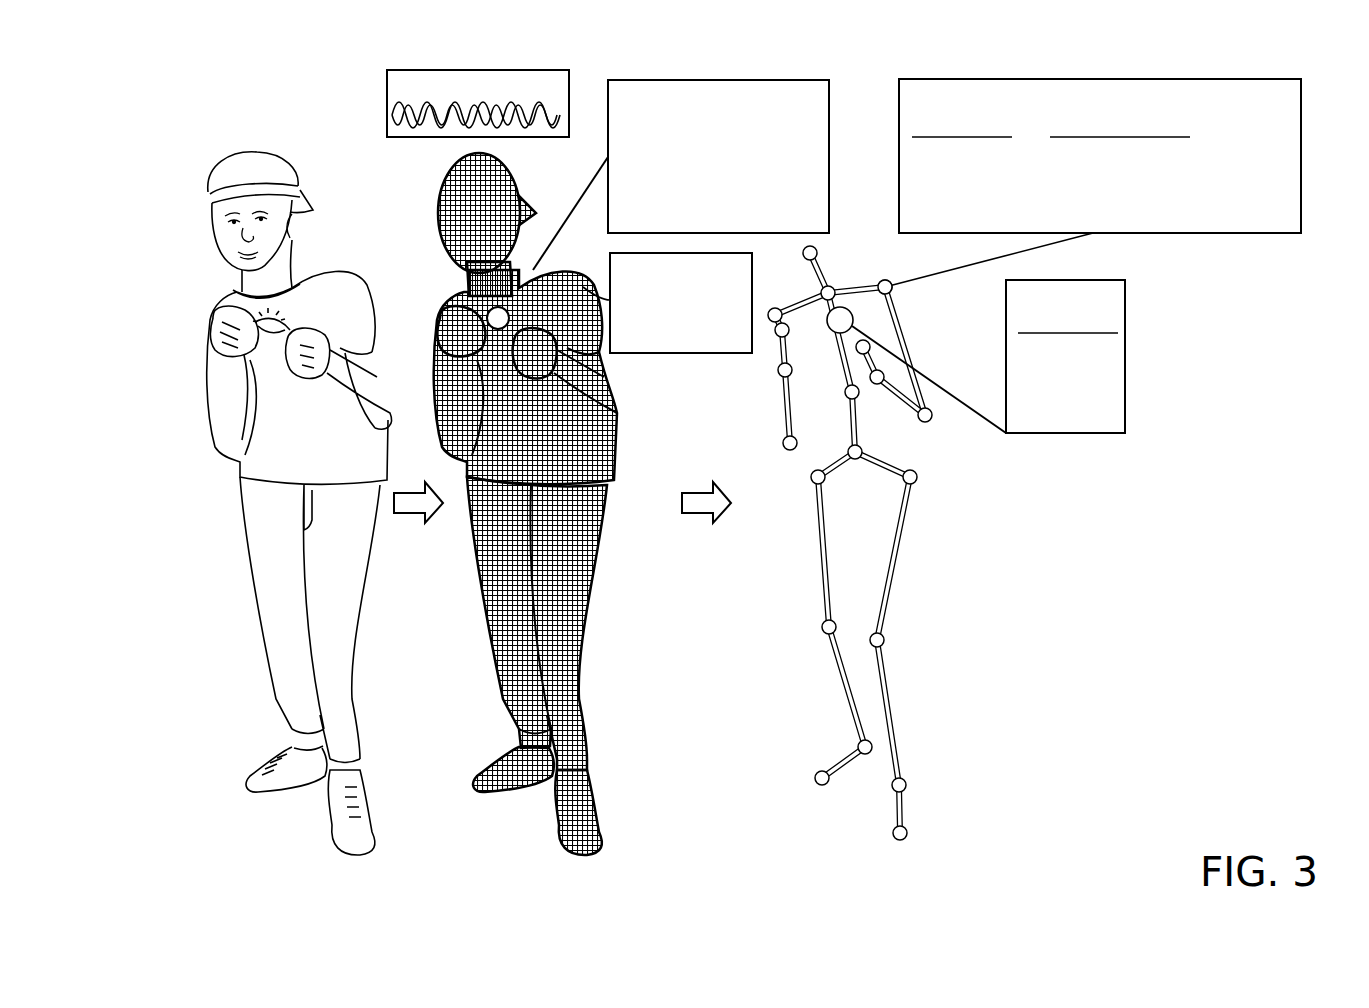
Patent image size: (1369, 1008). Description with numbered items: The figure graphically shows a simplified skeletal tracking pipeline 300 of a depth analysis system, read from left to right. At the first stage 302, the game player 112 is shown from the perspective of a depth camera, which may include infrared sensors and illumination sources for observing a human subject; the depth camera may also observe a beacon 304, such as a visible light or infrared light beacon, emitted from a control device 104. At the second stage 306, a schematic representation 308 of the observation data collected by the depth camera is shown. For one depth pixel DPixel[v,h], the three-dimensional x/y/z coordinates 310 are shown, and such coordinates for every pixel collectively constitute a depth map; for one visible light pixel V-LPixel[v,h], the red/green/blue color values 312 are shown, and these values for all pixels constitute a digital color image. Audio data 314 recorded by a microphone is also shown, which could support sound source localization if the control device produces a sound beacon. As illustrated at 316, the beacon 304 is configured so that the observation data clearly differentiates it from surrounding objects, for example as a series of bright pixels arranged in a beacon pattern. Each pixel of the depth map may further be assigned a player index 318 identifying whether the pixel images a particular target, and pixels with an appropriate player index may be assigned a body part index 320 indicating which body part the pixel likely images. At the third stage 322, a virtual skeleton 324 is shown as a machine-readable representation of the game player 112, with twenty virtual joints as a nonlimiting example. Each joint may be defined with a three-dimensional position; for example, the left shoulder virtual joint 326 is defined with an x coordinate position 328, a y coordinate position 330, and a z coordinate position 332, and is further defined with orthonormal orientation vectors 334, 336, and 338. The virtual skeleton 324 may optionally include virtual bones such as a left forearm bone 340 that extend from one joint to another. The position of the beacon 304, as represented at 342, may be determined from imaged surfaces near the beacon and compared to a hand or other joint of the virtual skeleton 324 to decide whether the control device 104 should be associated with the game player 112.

The skeletal tracking pipeline 300 is at (148, 104).
The view of game player from depth camera perspective 302 is at (185, 226).
The beacon 304 is at (262, 294).
The control device 104 is at (296, 316).
The game player 112 is at (222, 172).
The observation data stage 306 is at (428, 196).
The schematic representation of observation data 308 is at (446, 170).
The three-dimensional x/y/z coordinates 310 is at (698, 110).
The red/green/blue color values 312 is at (700, 284).
The audio data 314 is at (388, 80).
The beacon representation in observation data 316 is at (460, 299).
The player index 318 is at (618, 189).
The body part index 320 is at (618, 216).
The virtual skeleton stage 322 is at (775, 395).
The virtual skeleton 324 is at (898, 560).
The left shoulder virtual joint 326 is at (893, 290).
The x coordinate position 328 is at (918, 150).
The y coordinate position 330 is at (918, 176).
The z coordinate position 332 is at (918, 204).
The orientation vector 334 is at (1290, 152).
The orientation vector 336 is at (1290, 180).
The orientation vector 338 is at (1290, 209).
The left forearm bone 340 is at (905, 400).
The beacon position representation 342 is at (832, 331).